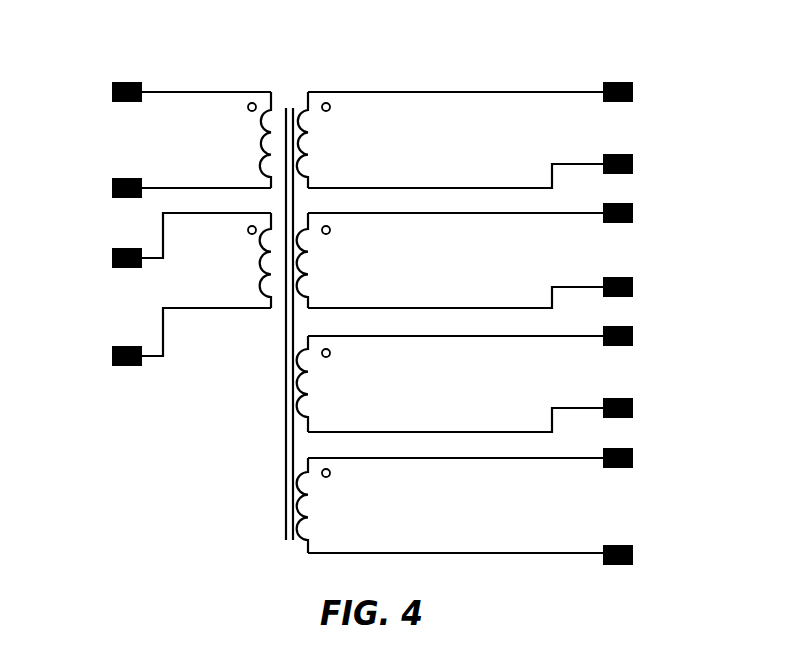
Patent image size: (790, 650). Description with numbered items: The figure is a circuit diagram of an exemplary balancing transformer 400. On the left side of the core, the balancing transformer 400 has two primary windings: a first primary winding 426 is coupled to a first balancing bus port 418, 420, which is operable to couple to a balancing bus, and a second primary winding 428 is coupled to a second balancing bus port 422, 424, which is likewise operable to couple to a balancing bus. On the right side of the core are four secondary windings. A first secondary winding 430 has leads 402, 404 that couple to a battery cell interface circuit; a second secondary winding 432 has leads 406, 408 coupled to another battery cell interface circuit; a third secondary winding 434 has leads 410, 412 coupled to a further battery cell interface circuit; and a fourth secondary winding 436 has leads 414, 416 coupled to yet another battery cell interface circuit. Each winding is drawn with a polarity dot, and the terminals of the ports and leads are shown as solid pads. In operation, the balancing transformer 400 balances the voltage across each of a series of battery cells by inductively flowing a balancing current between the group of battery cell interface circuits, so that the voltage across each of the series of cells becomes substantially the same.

The balancing transformer 400 is at (506, 44).
The lead 402 is at (633, 90).
The lead 404 is at (633, 162).
The lead 406 is at (633, 211).
The lead 408 is at (633, 285).
The lead 410 is at (633, 338).
The lead 412 is at (633, 410).
The lead 414 is at (633, 460).
The lead 416 is at (633, 557).
The first balancing bus port 418 is at (112, 91).
The first balancing bus port 420 is at (112, 188).
The second balancing bus port 422 is at (112, 258).
The second balancing bus port 424 is at (112, 356).
The first primary winding 426 is at (260, 146).
The second primary winding 428 is at (260, 269).
The first secondary winding 430 is at (304, 150).
The second secondary winding 432 is at (304, 272).
The third secondary winding 434 is at (304, 392).
The fourth secondary winding 436 is at (304, 514).